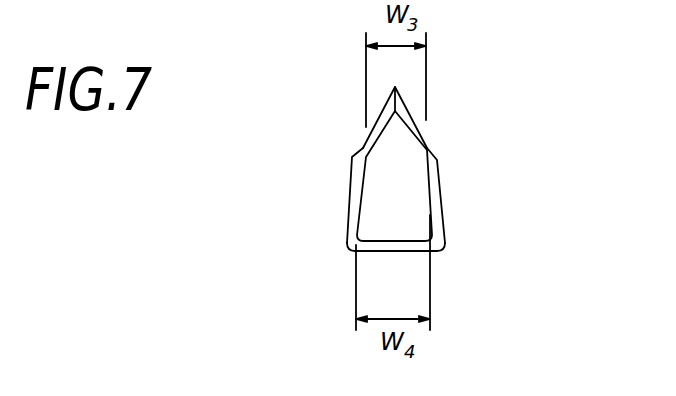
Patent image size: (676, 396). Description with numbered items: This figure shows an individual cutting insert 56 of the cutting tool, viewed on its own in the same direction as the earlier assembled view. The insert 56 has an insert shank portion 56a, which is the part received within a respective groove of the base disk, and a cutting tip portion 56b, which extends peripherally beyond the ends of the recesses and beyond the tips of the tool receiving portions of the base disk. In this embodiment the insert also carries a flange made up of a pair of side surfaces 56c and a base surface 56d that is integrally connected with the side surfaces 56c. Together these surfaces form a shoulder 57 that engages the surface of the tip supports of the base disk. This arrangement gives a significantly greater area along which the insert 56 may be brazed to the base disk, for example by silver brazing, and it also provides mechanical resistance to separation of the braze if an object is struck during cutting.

The insert 56 is at (340, 124).
The insert shank portion 56a is at (398, 162).
The cutting tip portion 56b is at (350, 193).
The side surfaces 56c is at (442, 202).
The base surface 56d is at (402, 248).
The shoulder 57 is at (350, 233).